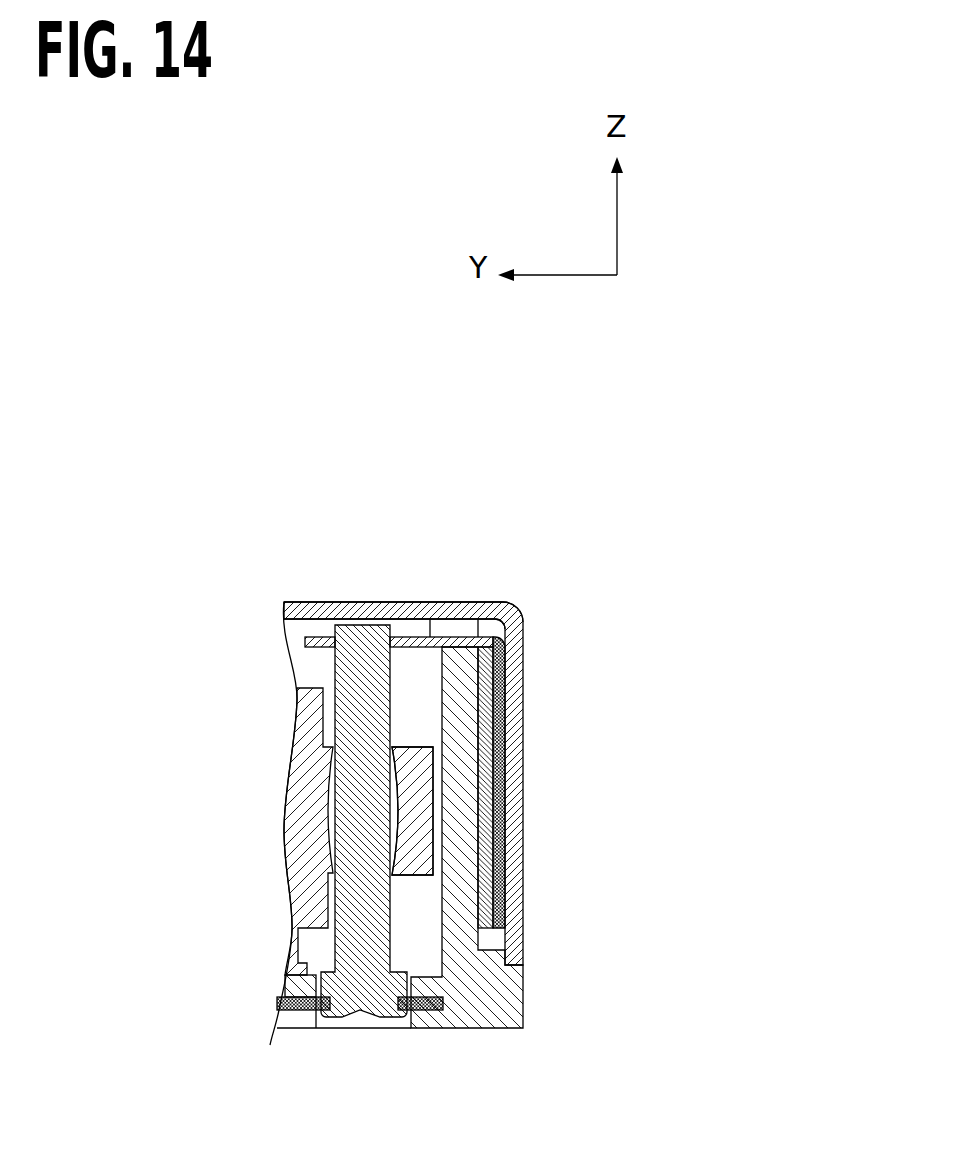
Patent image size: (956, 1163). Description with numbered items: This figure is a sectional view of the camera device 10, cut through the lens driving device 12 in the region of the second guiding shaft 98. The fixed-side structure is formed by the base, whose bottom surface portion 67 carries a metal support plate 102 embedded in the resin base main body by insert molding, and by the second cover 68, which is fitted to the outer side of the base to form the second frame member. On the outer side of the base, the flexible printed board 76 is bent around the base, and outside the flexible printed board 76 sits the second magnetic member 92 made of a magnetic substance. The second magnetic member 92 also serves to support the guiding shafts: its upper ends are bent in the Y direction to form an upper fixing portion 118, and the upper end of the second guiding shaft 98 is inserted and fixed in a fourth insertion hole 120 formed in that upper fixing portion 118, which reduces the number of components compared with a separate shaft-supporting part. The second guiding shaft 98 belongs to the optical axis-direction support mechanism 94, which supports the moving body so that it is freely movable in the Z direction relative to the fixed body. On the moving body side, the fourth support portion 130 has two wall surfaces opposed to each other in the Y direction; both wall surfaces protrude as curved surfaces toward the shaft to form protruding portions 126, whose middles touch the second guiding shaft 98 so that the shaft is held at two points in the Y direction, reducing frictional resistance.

The camera device 10 is at (343, 443).
The lens driving device 12 is at (433, 590).
The bottom surface portion 67 is at (296, 1022).
The second cover 68 is at (490, 608).
The flexible printed board 76 is at (495, 738).
The second magnetic member 92 is at (500, 668).
The optical axis-direction support mechanism 94 is at (403, 668).
The second guiding shaft 98 is at (392, 890).
The support plate 102 is at (406, 1005).
The upper fixing portion 118 is at (310, 637).
The fourth insertion hole 120 is at (378, 623).
The protruding portion 126 is at (323, 808).
The fourth support portion 130 is at (413, 855).